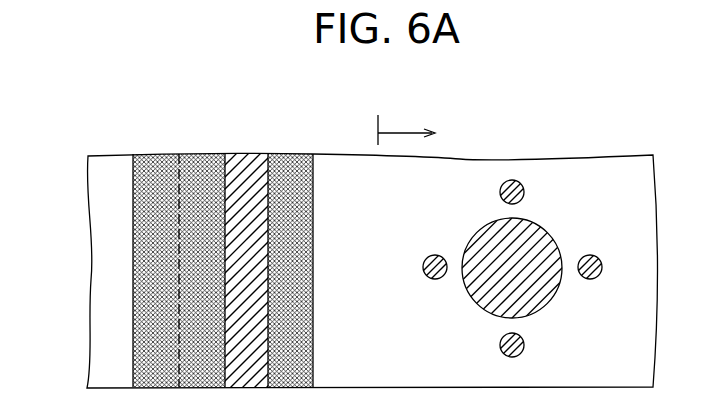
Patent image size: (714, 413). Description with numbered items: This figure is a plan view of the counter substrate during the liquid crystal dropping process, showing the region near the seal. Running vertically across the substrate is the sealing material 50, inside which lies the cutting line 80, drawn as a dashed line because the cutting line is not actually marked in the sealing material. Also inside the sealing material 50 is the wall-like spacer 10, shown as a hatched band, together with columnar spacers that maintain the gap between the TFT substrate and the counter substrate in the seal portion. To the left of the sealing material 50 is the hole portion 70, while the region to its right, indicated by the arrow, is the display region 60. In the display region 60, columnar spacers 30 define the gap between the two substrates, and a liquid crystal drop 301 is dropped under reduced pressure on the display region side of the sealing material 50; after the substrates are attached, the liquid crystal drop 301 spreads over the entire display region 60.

The hole portion 70 is at (103, 270).
The cutting line 80 is at (178, 197).
The sealing material 50 is at (200, 172).
The wall-like spacer 10 is at (247, 168).
The display region 60 is at (406, 124).
The columnar spacer 30 is at (424, 262).
The liquid crystal drop 301 is at (548, 232).